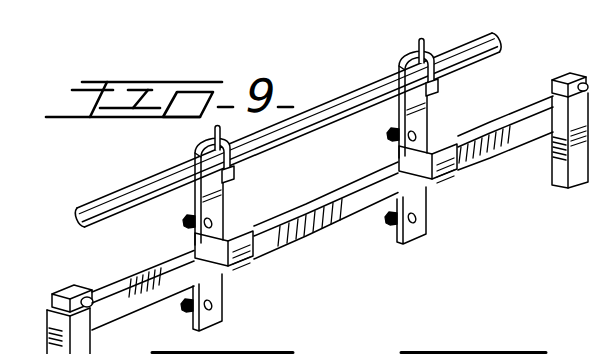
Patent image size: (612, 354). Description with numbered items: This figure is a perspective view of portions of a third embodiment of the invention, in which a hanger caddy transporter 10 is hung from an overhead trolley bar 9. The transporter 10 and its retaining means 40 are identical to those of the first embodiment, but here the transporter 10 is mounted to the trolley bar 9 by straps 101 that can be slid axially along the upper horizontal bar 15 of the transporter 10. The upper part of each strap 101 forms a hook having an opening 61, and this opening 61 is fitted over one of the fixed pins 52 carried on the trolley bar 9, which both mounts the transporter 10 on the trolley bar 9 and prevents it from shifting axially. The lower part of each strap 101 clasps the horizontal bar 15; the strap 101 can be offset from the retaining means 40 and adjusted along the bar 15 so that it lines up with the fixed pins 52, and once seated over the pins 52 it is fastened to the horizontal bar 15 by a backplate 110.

The trolley bar 9 is at (130, 186).
The transporter 10 is at (390, 26).
The upper horizontal bar 15 is at (538, 103).
The retaining means 40 is at (54, 297).
The fixed pins 52 is at (213, 129).
The opening 61 is at (233, 177).
The strap 101 is at (215, 206).
The backplate 110 is at (192, 234).